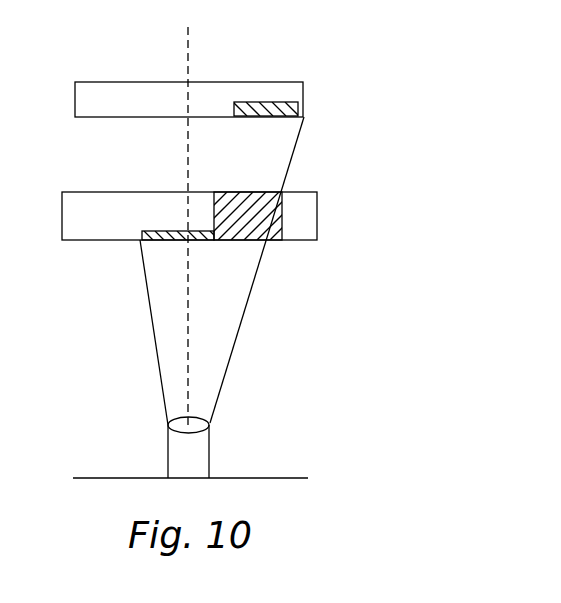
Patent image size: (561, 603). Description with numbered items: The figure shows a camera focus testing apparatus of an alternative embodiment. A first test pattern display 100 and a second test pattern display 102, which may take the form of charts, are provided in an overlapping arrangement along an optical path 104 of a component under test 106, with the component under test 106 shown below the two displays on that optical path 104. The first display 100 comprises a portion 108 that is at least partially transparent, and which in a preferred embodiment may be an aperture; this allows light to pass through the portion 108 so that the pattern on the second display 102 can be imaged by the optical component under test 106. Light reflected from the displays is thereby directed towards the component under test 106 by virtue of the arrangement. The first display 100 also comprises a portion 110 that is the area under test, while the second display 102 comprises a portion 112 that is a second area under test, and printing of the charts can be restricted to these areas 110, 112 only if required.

The first test pattern display 100 is at (317, 222).
The second test pattern display 102 is at (303, 87).
The optical path 104 is at (188, 41).
The component under test 106 is at (209, 445).
The at least partially transparent portion 108 is at (250, 227).
The area under test 110 is at (156, 237).
The second area under test 112 is at (298, 112).